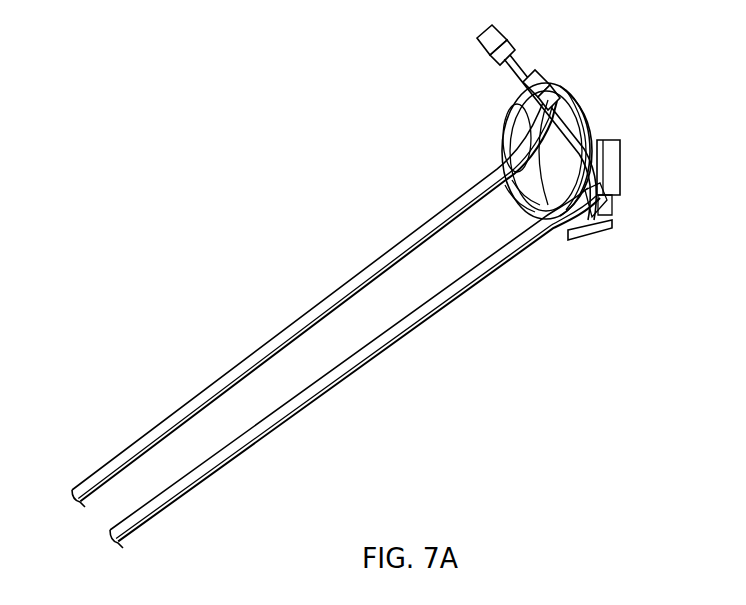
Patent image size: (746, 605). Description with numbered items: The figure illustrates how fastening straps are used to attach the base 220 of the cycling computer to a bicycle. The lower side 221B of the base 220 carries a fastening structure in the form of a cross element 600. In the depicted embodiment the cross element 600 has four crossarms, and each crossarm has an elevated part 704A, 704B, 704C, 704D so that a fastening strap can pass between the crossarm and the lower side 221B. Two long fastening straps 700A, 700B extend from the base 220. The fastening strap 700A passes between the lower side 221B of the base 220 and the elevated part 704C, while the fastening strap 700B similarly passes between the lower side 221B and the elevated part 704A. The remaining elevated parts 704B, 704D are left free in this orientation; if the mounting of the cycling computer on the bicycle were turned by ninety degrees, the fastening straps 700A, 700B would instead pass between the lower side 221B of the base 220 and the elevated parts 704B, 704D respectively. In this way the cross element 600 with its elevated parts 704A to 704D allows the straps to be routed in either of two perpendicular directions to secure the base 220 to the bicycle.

The fastening strap 700A is at (153, 425).
The fastening strap 700B is at (192, 500).
The elevated part 704A is at (585, 237).
The elevated part 704B is at (555, 83).
The elevated part 704C is at (517, 128).
The elevated part 704D is at (517, 203).
The base 220 is at (588, 87).
The lower side 221B is at (507, 177).
The cross element 600 is at (542, 151).